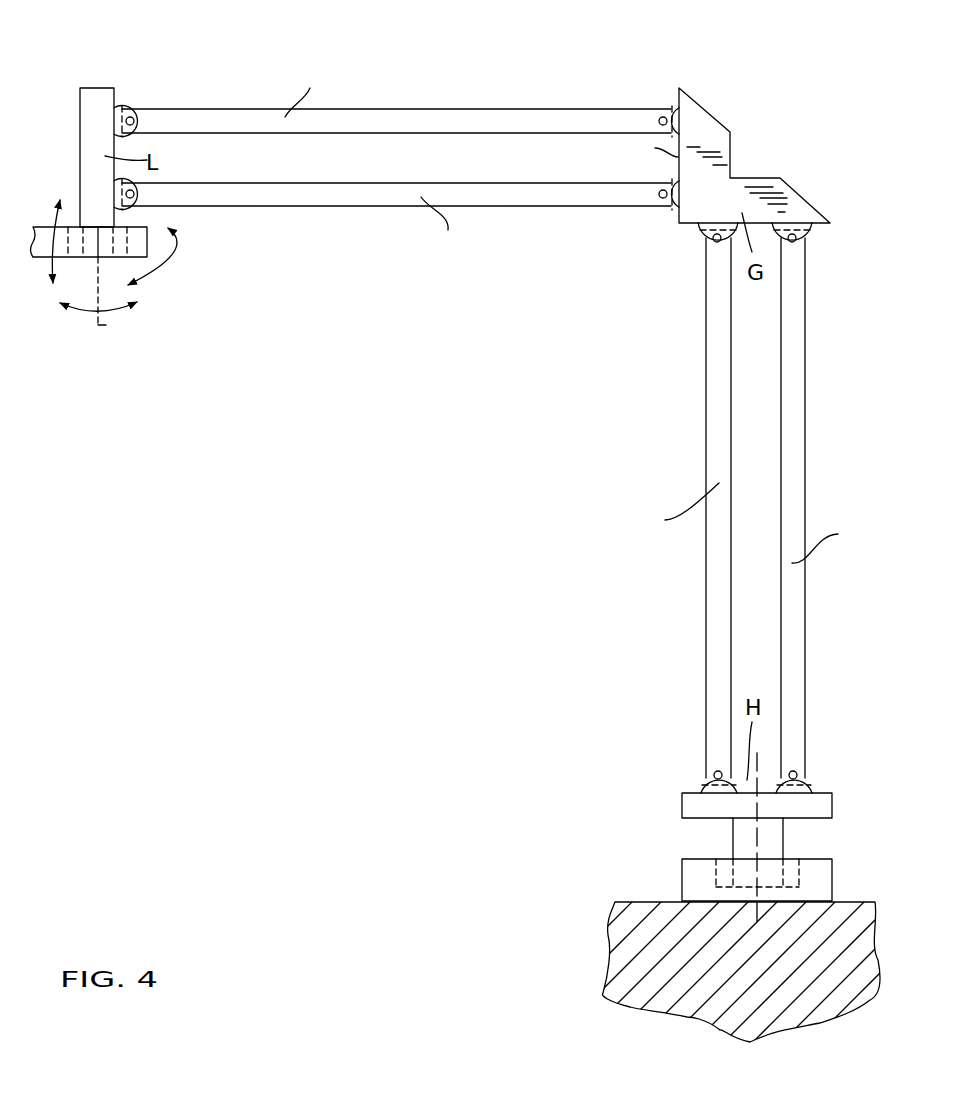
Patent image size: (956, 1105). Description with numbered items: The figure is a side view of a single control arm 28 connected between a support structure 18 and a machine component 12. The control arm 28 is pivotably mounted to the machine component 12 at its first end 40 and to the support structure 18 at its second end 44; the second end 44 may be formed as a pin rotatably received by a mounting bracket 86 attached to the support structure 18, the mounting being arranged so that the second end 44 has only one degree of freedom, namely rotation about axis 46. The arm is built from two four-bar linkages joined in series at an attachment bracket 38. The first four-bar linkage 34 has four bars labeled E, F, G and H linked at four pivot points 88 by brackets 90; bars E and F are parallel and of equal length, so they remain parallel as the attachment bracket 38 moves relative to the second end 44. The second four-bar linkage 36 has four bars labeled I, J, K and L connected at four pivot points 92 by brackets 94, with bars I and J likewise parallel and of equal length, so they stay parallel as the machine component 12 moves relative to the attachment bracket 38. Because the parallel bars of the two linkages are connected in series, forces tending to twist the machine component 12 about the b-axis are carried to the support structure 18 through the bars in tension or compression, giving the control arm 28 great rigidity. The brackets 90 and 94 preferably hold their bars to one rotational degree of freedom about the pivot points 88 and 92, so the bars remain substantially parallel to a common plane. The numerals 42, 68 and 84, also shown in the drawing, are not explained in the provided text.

The machine component 12 is at (90, 246).
The support structure 18 is at (617, 923).
The control arm 28 is at (756, 155).
The first four-bar linkage 34 is at (828, 463).
The second four-bar linkage 36 is at (428, 86).
The attachment bracket 38 is at (768, 188).
The first end 40 is at (98, 70).
The wrist axis 42 is at (100, 322).
The second end 44 is at (739, 828).
The axis 46 is at (758, 762).
The tool mounting plate 68 is at (43, 267).
The pivot plate 84 is at (742, 835).
The mounting bracket 86 is at (690, 882).
The pivot points 88 is at (713, 240).
The brackets 90 is at (703, 228).
The pivot points 92 is at (135, 122).
The brackets 94 is at (118, 103).